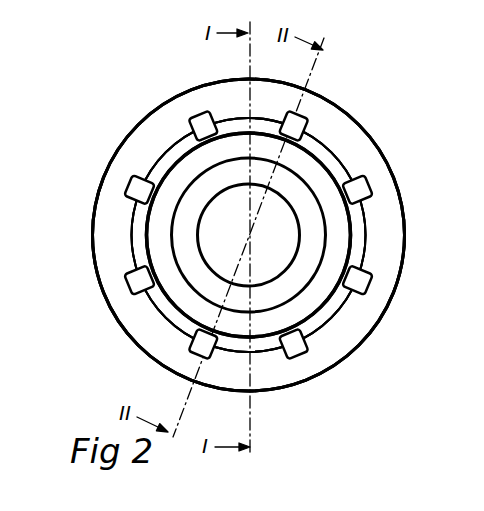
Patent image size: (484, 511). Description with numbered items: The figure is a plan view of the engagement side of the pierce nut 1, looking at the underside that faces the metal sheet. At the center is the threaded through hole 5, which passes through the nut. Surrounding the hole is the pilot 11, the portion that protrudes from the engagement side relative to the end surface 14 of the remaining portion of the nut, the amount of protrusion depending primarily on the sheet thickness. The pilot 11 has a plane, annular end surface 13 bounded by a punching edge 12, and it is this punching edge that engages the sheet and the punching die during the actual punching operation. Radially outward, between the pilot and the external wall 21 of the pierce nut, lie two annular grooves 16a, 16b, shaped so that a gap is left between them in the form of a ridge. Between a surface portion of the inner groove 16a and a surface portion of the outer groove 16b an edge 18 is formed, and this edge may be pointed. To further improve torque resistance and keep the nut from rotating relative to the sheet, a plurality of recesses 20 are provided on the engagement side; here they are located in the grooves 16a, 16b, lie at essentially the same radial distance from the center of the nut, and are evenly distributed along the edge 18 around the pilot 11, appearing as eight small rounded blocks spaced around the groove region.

The pierce nut 1 is at (101, 136).
The threaded through hole 5 is at (270, 267).
The pilot 11 is at (314, 177).
The punching edge 12 is at (327, 300).
The annular end surface 13 is at (285, 200).
The end surface 14 is at (128, 315).
The inner annular groove 16a is at (132, 232).
The outer annular groove 16b is at (125, 252).
The edge 18 is at (171, 314).
The recesses 20 is at (192, 127).
The external wall 21 is at (349, 368).